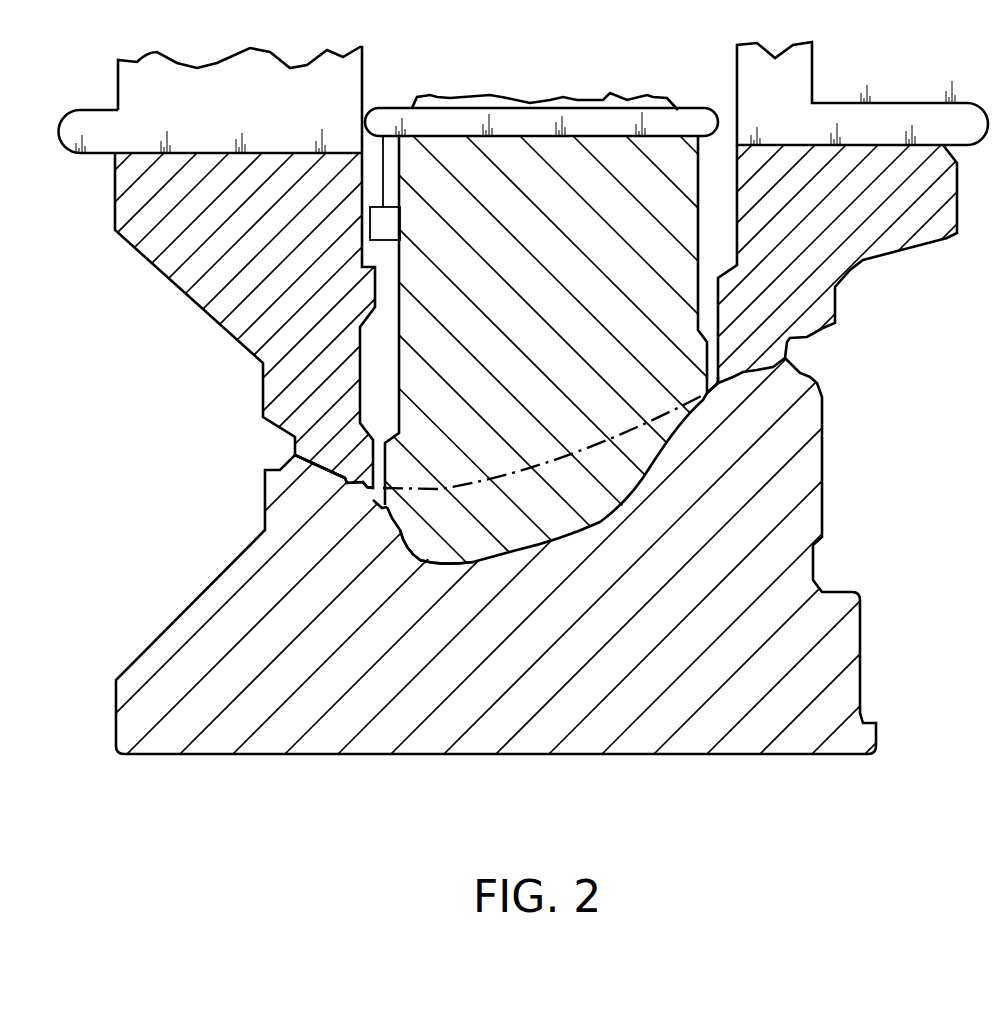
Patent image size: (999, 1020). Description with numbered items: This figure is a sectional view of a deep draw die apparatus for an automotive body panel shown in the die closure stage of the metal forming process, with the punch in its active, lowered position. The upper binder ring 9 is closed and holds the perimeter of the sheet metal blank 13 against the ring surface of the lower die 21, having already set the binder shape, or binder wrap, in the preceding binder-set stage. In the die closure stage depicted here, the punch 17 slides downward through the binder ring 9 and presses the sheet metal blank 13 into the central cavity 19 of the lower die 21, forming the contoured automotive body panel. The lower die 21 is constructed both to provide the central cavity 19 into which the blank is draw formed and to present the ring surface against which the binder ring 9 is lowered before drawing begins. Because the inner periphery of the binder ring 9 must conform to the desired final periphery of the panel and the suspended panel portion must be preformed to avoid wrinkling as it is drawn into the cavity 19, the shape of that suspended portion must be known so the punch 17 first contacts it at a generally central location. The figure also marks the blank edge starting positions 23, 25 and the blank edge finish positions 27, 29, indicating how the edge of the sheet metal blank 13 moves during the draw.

The binder ring 9 is at (160, 247).
The sheet metal blank 13 is at (440, 562).
The punch 17 is at (637, 185).
The central cavity 19 is at (573, 527).
The lower die 21 is at (598, 732).
The blank edge starting position 23 is at (322, 462).
The blank edge starting position 25 is at (772, 360).
The blank edge finish position 27 is at (337, 482).
The blank edge finish position 29 is at (735, 384).